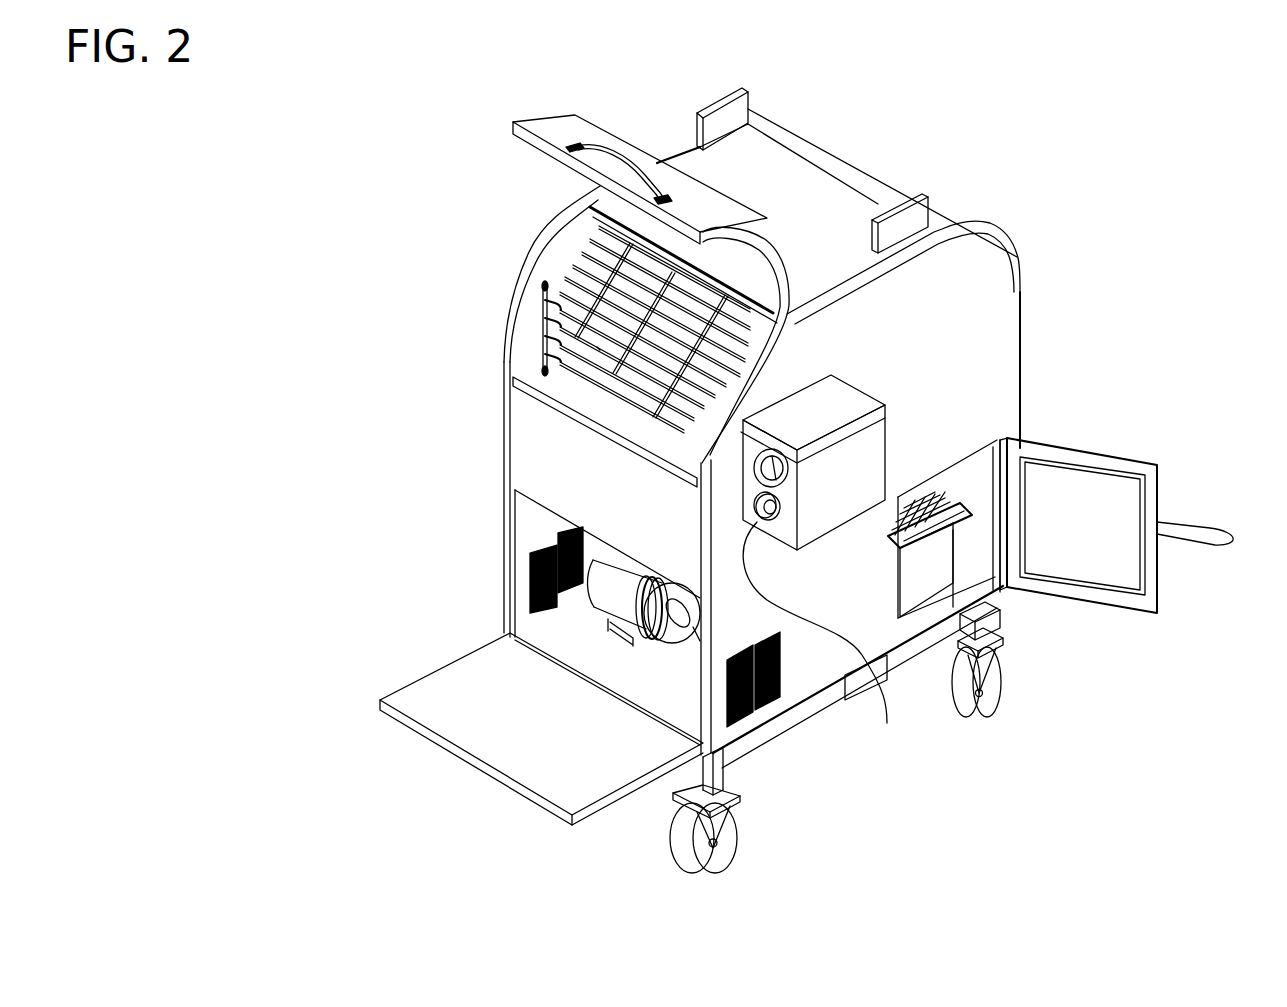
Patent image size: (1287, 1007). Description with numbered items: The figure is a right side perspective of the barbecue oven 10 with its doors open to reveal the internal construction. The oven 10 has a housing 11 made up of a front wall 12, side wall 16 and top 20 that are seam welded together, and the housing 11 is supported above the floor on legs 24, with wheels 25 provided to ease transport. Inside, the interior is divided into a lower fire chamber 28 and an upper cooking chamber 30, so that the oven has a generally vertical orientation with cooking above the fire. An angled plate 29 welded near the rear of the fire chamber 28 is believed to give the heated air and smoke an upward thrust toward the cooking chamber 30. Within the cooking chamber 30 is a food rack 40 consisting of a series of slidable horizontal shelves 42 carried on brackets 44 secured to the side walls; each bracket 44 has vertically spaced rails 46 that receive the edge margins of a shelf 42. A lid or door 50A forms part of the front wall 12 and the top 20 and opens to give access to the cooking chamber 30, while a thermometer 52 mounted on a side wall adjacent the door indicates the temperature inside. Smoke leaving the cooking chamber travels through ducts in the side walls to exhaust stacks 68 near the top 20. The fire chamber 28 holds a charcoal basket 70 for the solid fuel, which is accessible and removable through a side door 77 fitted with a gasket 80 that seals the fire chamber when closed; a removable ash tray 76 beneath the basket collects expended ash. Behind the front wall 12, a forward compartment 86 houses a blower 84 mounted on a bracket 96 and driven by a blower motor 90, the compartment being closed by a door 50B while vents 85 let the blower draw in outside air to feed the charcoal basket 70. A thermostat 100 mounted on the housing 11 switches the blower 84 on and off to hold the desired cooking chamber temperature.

The barbecue oven 10 is at (365, 160).
The housing 11 is at (1022, 238).
The front wall 12 is at (557, 472).
The side wall 16 is at (957, 332).
The top 20 is at (757, 178).
The legs 24 is at (727, 823).
The wheels 25 is at (993, 693).
The fire chamber 28 is at (976, 480).
The angled plate 29 is at (983, 558).
The cooking chamber 30 is at (584, 268).
The food rack 40 is at (568, 387).
The shelves 42 is at (597, 347).
The brackets 44 is at (543, 290).
The rails 46 is at (546, 372).
The door 50A is at (557, 122).
The door 50B is at (423, 697).
The thermometer 52 is at (824, 638).
The exhaust stacks 68 is at (716, 104).
The charcoal basket 70 is at (930, 663).
The ash tray 76 is at (997, 625).
The side door 77 is at (1073, 452).
The gasket 80 is at (1143, 574).
The blower 84 is at (630, 677).
The vents 85 is at (533, 578).
The forward compartment 86 is at (670, 676).
The blower motor 90 is at (533, 558).
The bracket 96 is at (597, 588).
The thermostat 100 is at (758, 548).